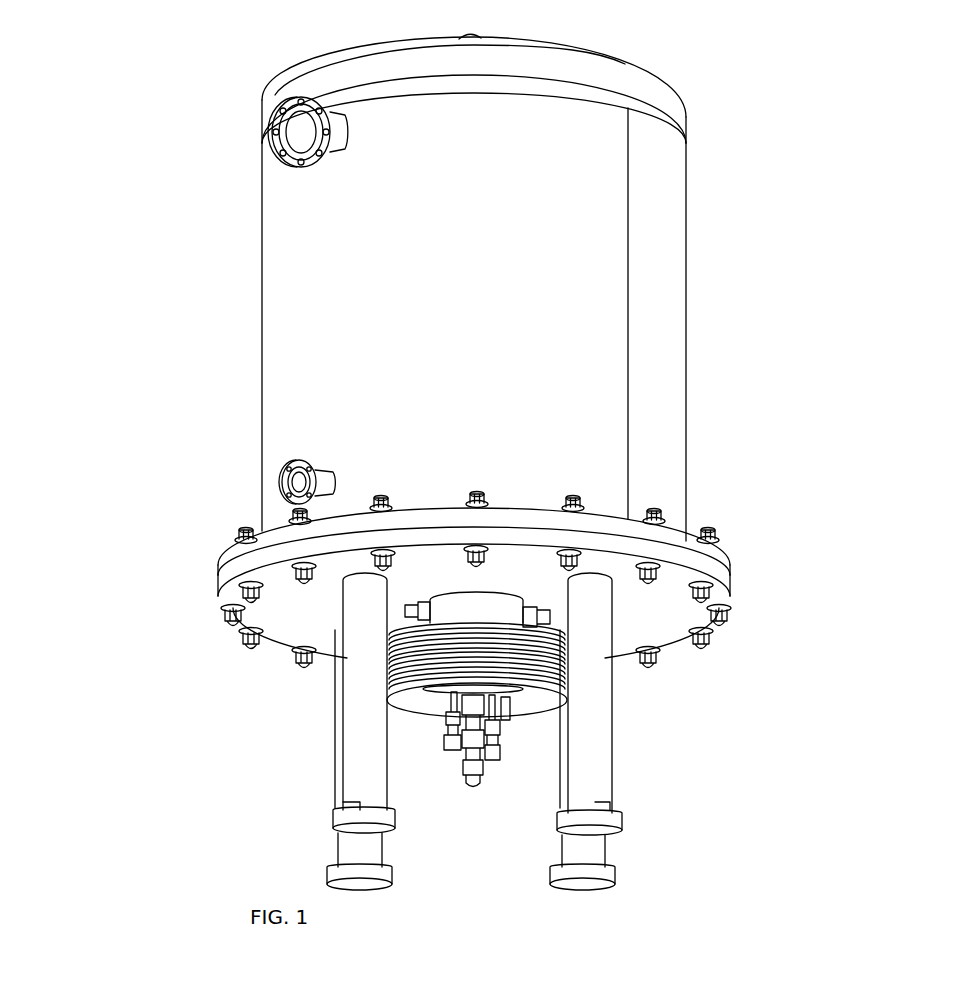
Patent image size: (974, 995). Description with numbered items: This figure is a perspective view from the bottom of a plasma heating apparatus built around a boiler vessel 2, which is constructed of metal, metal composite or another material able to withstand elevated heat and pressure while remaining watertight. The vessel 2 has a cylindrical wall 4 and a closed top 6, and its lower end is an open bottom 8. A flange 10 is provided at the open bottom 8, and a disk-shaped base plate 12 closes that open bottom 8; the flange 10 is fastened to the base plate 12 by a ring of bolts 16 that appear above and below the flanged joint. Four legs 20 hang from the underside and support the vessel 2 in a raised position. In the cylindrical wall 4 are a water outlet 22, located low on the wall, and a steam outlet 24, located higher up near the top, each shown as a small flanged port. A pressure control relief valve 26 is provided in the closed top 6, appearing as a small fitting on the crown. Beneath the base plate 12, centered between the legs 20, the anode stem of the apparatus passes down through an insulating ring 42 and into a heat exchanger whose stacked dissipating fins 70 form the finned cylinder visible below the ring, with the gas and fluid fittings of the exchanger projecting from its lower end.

The boiler vessel 2 is at (866, 294).
The cylindrical wall 4 is at (690, 247).
The closed top 6 is at (556, 43).
The open bottom 8 is at (711, 511).
The flange 10 is at (735, 566).
The base plate 12 is at (733, 590).
The bolts 16 is at (247, 534).
The legs 20 is at (340, 720).
The water outlet 22 is at (293, 482).
The steam outlet 24 is at (299, 133).
The pressure control relief valve 26 is at (478, 33).
The insulating ring 42 is at (490, 606).
The dissipating fins 70 is at (533, 663).